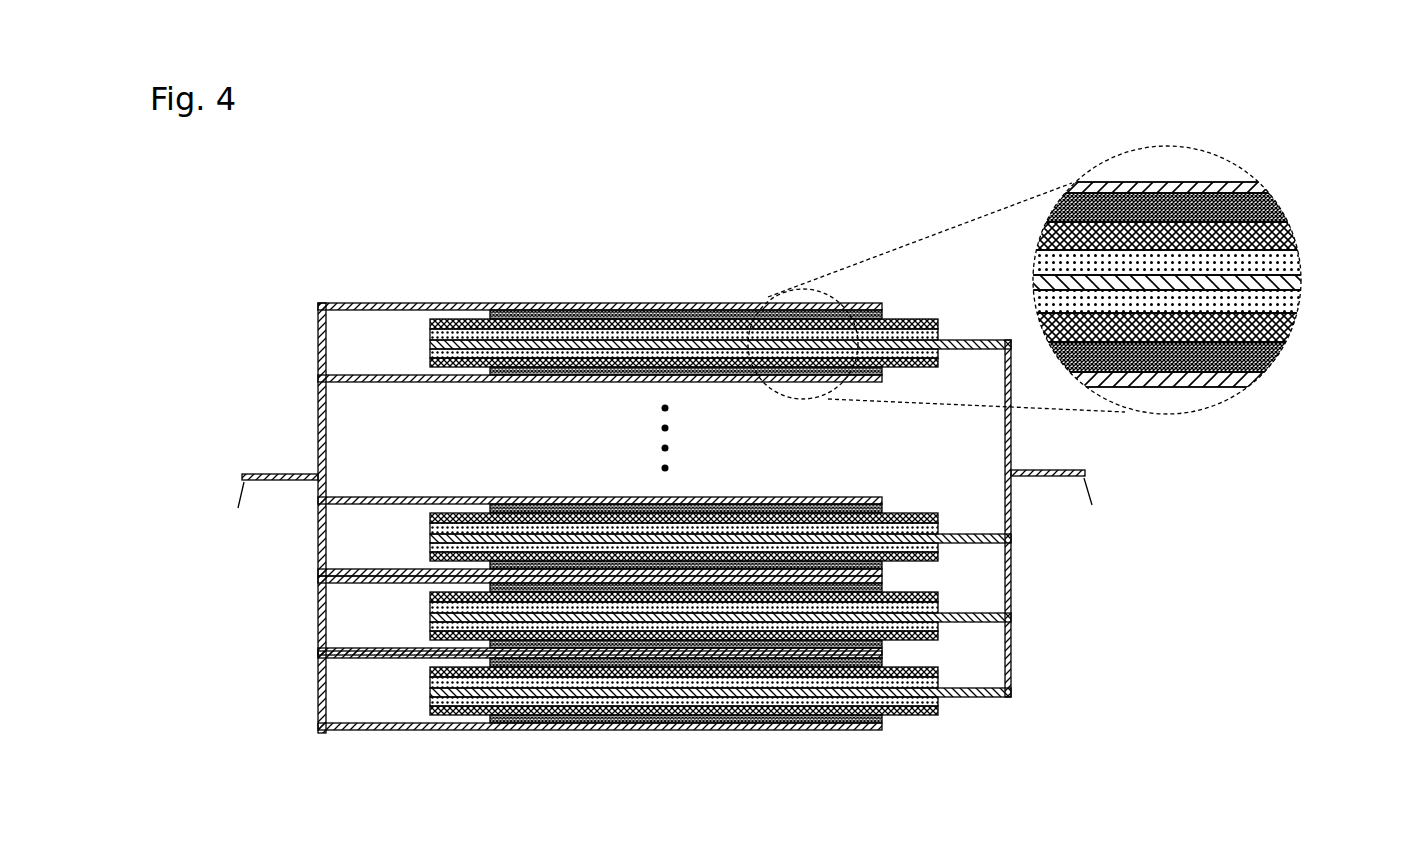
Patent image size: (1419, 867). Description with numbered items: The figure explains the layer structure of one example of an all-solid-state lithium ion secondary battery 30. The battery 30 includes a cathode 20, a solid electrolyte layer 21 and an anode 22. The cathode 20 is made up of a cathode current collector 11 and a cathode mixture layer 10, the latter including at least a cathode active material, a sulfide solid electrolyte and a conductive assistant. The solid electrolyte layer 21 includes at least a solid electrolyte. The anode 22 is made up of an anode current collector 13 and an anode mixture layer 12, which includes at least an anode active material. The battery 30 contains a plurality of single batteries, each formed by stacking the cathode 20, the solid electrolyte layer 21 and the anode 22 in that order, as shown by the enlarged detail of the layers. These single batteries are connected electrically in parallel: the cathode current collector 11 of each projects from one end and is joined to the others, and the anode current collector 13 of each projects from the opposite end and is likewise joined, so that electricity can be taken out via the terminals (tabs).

The cathode mixture layer 10 is at (1278, 207).
The cathode current collector 11 is at (1255, 185).
The anode mixture layer 12 is at (1299, 259).
The anode current collector 13 is at (1301, 283).
The cathode 20 is at (863, 451).
The solid electrolyte layer 21 is at (1293, 235).
The anode 22 is at (919, 476).
The all-solid-state lithium ion secondary battery 30 is at (679, 220).